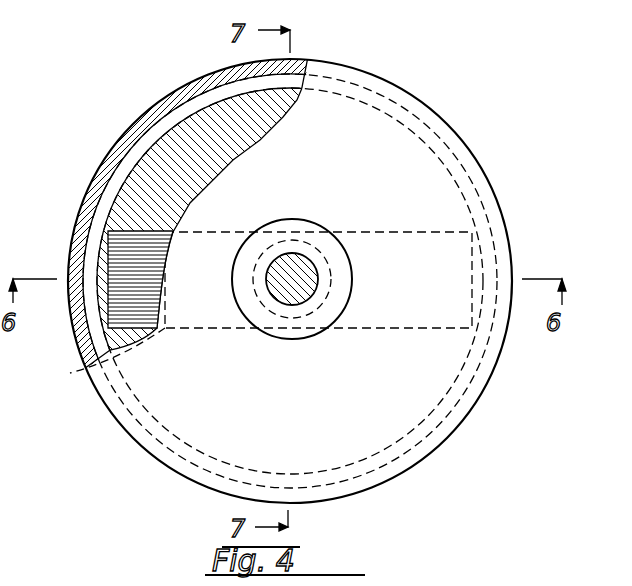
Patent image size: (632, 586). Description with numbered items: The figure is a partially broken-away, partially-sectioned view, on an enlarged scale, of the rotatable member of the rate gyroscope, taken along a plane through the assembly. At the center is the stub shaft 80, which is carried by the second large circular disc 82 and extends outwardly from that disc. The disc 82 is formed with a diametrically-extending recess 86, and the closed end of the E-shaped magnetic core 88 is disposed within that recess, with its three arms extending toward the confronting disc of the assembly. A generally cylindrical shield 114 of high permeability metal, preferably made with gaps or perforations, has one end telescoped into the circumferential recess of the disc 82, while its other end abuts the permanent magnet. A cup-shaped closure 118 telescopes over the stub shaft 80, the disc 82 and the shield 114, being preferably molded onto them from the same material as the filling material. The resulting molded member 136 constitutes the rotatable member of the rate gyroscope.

The stub shaft 80 is at (303, 272).
The second large circular disc 82 is at (208, 113).
The diametrically-extending recess 86 is at (113, 226).
The E-shaped magnetic core 88 is at (101, 360).
The shield 114 is at (122, 165).
The cup-shaped closure 118 is at (196, 77).
The molded member 136 is at (567, 211).